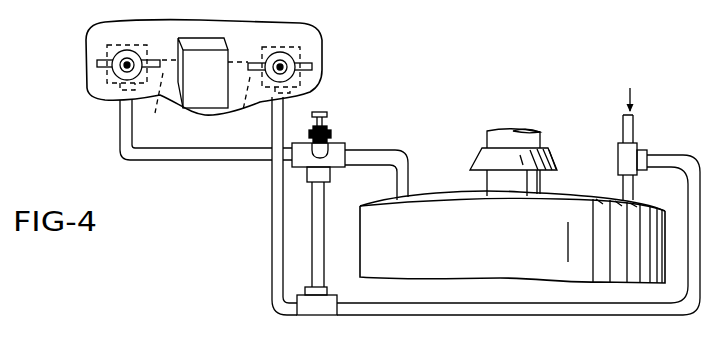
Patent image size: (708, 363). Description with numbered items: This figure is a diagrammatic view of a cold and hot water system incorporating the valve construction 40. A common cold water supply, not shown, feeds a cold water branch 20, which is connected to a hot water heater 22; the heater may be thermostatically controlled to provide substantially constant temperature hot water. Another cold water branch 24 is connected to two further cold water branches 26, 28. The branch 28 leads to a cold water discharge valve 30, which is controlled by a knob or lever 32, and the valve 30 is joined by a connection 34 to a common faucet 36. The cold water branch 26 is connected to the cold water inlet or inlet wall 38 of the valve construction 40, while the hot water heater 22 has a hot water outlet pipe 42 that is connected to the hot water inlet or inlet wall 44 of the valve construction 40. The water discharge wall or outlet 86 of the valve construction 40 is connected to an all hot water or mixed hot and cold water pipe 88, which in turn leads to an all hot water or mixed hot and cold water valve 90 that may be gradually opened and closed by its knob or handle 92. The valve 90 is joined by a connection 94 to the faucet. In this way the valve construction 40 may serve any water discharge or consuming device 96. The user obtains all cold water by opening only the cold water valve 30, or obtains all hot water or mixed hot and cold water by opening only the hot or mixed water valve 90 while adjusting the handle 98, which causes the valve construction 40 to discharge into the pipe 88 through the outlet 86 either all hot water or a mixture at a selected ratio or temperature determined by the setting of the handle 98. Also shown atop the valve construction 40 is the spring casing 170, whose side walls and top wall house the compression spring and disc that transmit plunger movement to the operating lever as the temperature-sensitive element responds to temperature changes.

The cold water branch 20 is at (624, 123).
The hot water heater 22 is at (491, 252).
The cold water branch 24 is at (570, 316).
The cold water branch 26 is at (312, 261).
The cold water branch 28 is at (271, 242).
The cold water discharge valve 30 is at (303, 52).
The knob or lever 32 is at (313, 66).
The connection 34 is at (248, 100).
The common faucet 36 is at (195, 108).
The cold water inlet wall 38 is at (330, 178).
The valve construction 40 is at (357, 152).
The hot water outlet pipe 42 is at (409, 182).
The hot water inlet wall 44 is at (345, 170).
The water discharge wall or outlet 86 is at (300, 157).
The mixed hot and cold water pipe 88 is at (187, 161).
The mixed hot and cold water valve 90 is at (107, 84).
The knob or handle 92 is at (97, 63).
The connection 94 is at (156, 99).
The water discharge or consuming device 96 is at (106, 137).
The handle 98 is at (325, 115).
The spring casing 170 is at (332, 122).